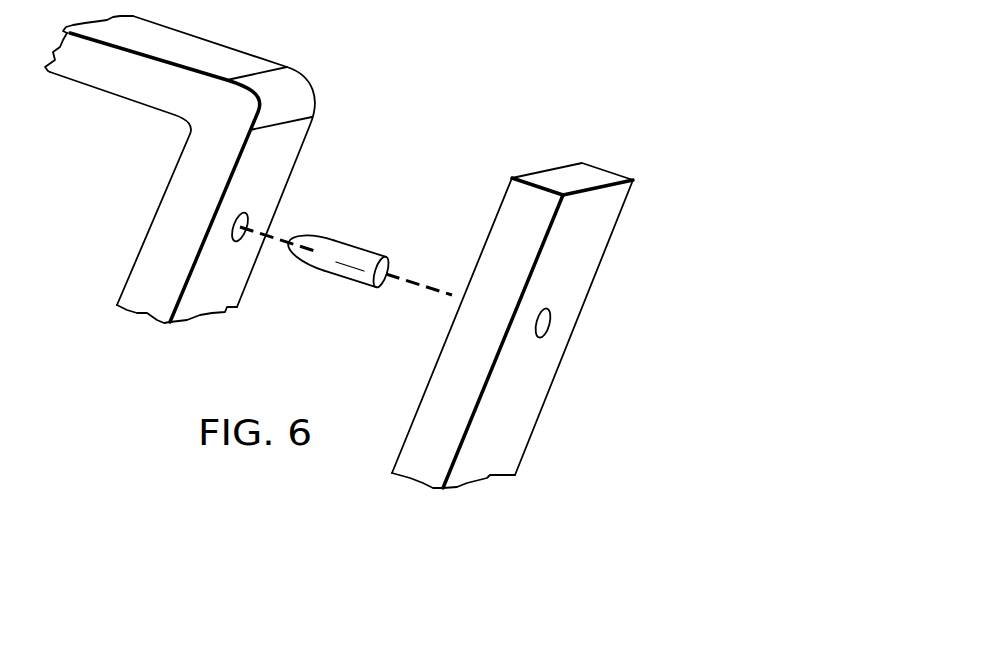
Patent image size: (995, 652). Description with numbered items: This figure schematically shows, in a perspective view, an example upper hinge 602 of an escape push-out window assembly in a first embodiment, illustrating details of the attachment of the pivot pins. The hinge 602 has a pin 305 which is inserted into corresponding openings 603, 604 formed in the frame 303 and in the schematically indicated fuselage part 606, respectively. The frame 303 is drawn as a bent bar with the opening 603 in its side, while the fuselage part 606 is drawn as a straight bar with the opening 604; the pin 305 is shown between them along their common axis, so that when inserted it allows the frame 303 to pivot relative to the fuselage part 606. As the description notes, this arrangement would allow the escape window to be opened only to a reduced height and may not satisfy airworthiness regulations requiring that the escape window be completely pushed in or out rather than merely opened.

The hinge 602 is at (452, 97).
The frame 303 is at (108, 95).
The opening 603 is at (243, 237).
The pin 305 is at (362, 247).
The fuselage part 606 is at (523, 418).
The opening 604 is at (550, 327).